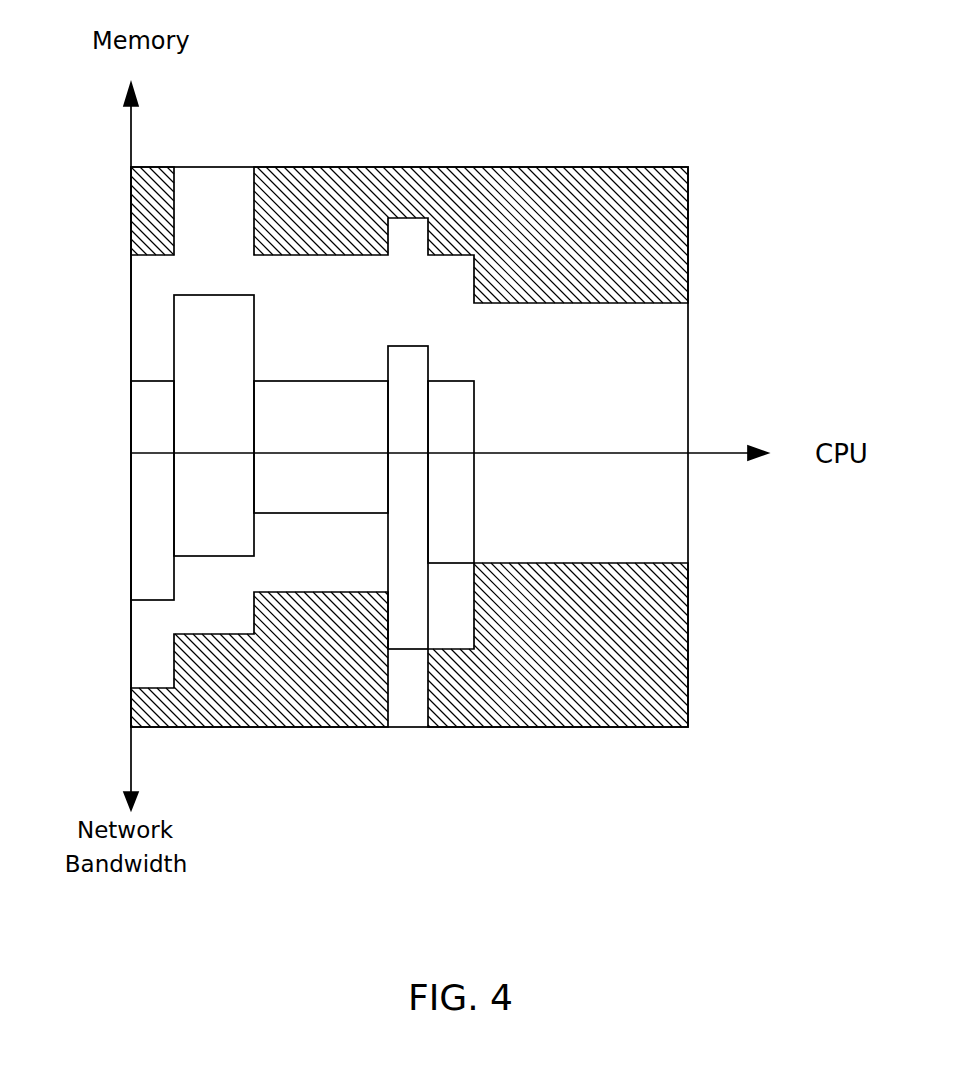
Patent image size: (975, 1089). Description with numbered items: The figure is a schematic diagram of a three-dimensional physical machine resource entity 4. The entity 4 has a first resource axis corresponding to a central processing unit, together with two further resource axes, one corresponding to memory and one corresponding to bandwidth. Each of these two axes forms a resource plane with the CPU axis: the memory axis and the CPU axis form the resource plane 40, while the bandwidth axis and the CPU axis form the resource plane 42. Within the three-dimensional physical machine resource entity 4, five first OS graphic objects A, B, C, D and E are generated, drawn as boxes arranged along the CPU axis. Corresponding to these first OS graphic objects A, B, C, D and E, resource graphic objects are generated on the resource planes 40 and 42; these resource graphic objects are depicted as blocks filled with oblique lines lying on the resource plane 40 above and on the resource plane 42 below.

The resource plane 40 is at (688, 220).
The resource plane 42 is at (688, 639).
The three-dimensional physical machine resource entity 4 is at (612, 35).
The first OS graphic object A is at (152, 490).
The first OS graphic object B is at (214, 425).
The first OS graphic object C is at (321, 447).
The first OS graphic object D is at (408, 497).
The first OS graphic object E is at (451, 472).